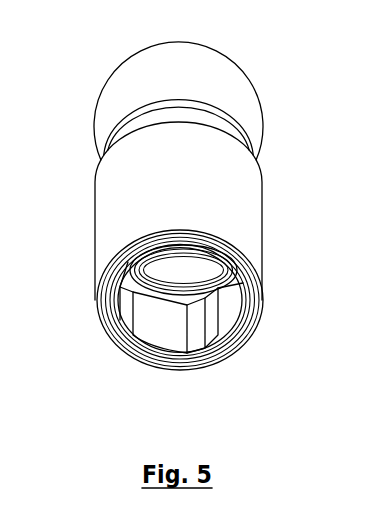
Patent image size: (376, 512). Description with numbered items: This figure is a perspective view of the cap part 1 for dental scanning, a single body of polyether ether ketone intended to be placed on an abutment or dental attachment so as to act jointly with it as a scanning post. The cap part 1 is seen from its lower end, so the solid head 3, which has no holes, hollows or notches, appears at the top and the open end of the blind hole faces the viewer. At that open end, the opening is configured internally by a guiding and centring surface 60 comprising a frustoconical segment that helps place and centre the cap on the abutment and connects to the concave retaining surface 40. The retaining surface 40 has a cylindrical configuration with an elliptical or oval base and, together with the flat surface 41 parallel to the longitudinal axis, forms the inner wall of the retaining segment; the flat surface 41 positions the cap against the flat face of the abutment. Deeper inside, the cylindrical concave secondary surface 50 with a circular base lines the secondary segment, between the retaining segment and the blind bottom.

The cap part 1 is at (40, 134).
The solid head 3 is at (120, 85).
The concave retaining surface 40 is at (186, 337).
The flat surface 41 is at (169, 327).
The cylindrical concave secondary surface 50 is at (190, 266).
The guiding and centring surface 60 is at (112, 333).